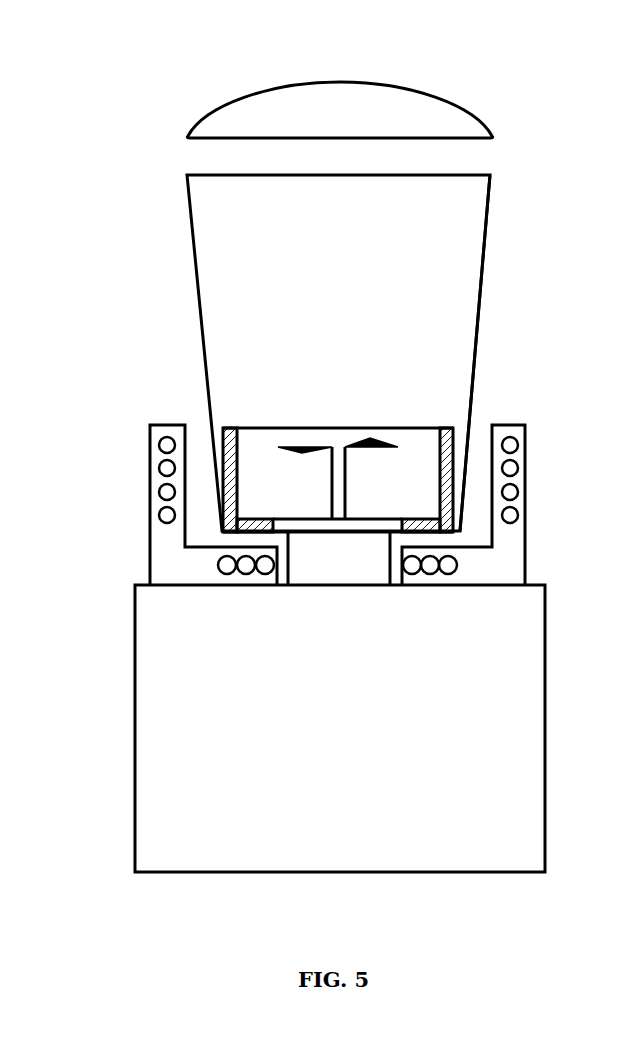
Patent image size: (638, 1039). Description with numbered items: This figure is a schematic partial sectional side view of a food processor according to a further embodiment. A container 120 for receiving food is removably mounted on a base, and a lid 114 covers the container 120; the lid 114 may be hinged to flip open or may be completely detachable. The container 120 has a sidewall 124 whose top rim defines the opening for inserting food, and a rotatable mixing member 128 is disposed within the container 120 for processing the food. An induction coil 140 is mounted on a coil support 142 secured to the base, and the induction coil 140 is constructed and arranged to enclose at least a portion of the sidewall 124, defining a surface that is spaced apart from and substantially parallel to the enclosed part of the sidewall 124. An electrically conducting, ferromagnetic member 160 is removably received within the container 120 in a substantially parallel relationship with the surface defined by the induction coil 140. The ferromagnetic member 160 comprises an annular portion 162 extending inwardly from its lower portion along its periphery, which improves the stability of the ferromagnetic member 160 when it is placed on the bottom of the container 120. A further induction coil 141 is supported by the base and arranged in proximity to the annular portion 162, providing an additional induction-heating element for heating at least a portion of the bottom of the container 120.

The lid 114 is at (267, 88).
The container 120 is at (463, 222).
The sidewall 124 is at (475, 305).
The rotatable mixing member 128 is at (338, 472).
The induction coil 140 is at (159, 444).
The further induction coil 141 is at (225, 573).
The coil support 142 is at (163, 557).
The electrically conducting member 160 is at (222, 430).
The annular portion 162 is at (257, 522).